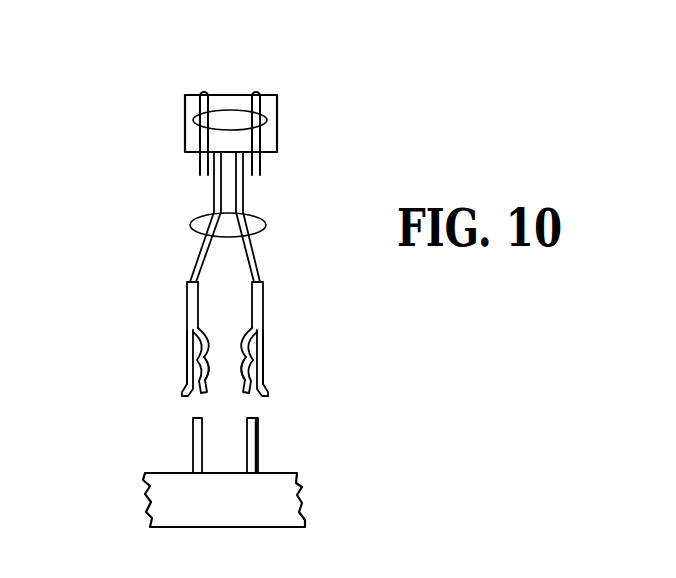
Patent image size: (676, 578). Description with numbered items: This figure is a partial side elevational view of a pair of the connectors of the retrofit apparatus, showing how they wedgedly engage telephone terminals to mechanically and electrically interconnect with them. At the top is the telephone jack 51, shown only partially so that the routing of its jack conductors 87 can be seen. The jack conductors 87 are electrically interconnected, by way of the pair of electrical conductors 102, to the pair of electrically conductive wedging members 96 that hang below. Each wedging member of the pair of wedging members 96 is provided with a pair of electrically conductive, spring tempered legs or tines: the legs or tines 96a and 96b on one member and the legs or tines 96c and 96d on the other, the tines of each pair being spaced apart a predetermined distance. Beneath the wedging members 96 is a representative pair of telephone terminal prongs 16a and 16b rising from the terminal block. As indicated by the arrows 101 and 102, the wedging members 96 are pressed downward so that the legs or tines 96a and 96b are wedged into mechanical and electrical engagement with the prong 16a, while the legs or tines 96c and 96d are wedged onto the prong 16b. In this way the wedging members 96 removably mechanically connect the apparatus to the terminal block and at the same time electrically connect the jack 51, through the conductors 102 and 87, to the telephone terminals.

The telephone jack 51 is at (235, 93).
The jack conductors 87 is at (193, 122).
The electrical conductors 102 is at (267, 225).
The wedging members 96 is at (187, 292).
The leg or tine 96a is at (187, 327).
The leg or tine 96b is at (200, 367).
The leg or tine 96c is at (262, 337).
The leg or tine 96d is at (250, 364).
The arrow 101 is at (252, 398).
The telephone terminal prong 16a is at (193, 440).
The telephone terminal prong 16b is at (258, 442).